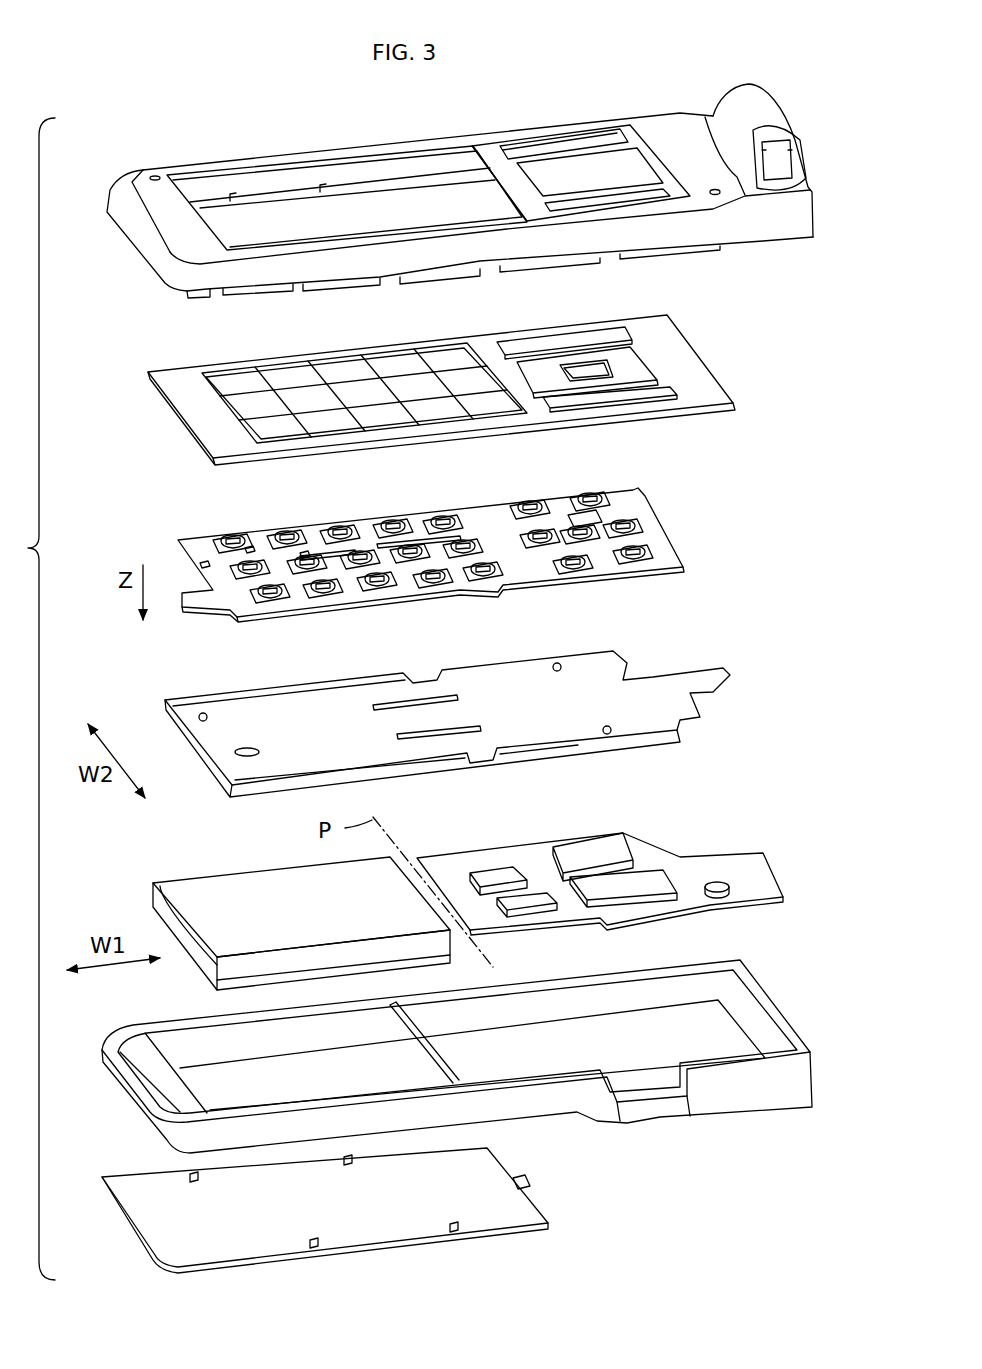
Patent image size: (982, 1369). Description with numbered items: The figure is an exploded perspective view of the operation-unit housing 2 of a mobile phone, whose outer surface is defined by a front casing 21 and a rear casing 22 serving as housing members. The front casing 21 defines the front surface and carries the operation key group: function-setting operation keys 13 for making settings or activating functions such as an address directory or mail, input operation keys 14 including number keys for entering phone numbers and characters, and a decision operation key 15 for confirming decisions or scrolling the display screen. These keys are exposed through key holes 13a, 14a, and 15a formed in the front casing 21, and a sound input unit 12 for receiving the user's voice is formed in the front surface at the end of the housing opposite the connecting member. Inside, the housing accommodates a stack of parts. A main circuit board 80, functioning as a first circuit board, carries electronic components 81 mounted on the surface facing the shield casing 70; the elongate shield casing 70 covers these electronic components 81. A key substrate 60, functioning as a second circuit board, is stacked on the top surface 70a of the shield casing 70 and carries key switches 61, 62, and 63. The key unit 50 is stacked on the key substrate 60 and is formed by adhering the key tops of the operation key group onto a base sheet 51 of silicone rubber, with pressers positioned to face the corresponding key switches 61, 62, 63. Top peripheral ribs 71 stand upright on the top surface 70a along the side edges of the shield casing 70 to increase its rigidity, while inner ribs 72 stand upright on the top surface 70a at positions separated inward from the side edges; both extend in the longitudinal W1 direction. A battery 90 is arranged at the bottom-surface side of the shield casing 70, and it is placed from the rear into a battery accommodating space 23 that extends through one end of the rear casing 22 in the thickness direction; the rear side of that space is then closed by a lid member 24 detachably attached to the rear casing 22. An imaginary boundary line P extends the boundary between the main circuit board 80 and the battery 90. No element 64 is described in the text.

The operation-unit housing 2 is at (480, 179).
The sound input unit 12 is at (154, 176).
The function-setting operation keys 13 is at (525, 345).
The key hole 13a is at (585, 128).
The input operation keys 14 is at (393, 362).
The key hole 14a is at (345, 152).
The decision operation key 15 is at (585, 365).
The key hole 15a is at (537, 158).
The front casing 21 is at (655, 118).
The rear casing 22 is at (460, 1052).
The battery accommodating space 23 is at (203, 1085).
The lid member 24 is at (525, 1212).
The key unit 50 is at (453, 377).
The base sheet 51 is at (188, 425).
The key substrate 60 is at (459, 537).
The key switch 61 is at (528, 500).
The key switch 62 is at (390, 520).
The key switch 63 is at (575, 520).
The light guide 64 is at (428, 525).
The shield casing 70 is at (463, 707).
The top surface 70a is at (272, 715).
The top peripheral ribs 71 is at (320, 680).
The inner ribs 72 is at (475, 725).
The main circuit board 80 is at (600, 861).
The electronic components 81 is at (580, 852).
The battery 90 is at (140, 878).